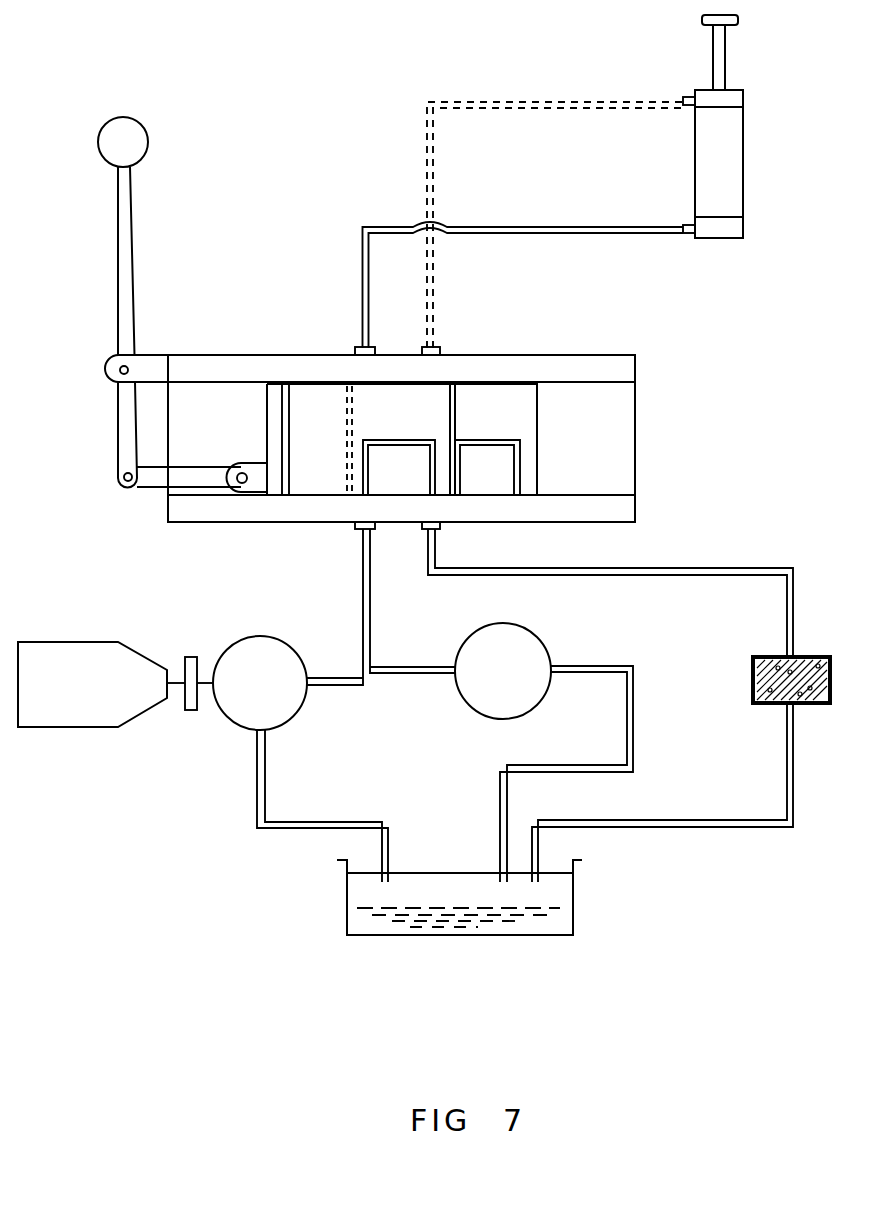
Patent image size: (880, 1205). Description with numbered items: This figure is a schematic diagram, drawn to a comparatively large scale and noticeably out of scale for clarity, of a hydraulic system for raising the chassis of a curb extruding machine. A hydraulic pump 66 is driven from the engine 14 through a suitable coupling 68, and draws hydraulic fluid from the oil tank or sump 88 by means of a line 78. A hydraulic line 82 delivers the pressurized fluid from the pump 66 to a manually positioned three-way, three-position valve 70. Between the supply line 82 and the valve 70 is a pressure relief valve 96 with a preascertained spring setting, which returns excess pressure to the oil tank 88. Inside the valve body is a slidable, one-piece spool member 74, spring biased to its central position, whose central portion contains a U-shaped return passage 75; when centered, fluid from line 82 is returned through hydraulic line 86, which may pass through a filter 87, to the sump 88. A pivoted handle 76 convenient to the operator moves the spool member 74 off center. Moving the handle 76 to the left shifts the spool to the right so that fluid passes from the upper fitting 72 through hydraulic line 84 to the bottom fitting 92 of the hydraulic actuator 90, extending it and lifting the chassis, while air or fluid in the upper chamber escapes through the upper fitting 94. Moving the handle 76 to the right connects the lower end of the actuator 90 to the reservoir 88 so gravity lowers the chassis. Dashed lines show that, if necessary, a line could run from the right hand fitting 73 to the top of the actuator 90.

The engine 14 is at (58, 723).
The hydraulic pump 66 is at (292, 719).
The coupling 68 is at (190, 711).
The three-way, three-position valve 70 is at (608, 357).
The upper fitting 72 is at (356, 349).
The right hand fitting 73 is at (433, 348).
The spool member 74 is at (530, 409).
The U-shaped return passage 75 is at (417, 440).
The pivoted handle 76 is at (125, 189).
The line 78 is at (295, 830).
The hydraulic line 82 is at (362, 572).
The hydraulic line 84 is at (361, 289).
The hydraulic line 86 is at (726, 568).
The filter 87 is at (825, 656).
The oil tank or sump 88 is at (574, 898).
The hydraulic actuator 90 is at (735, 186).
The bottom fitting 92 is at (689, 234).
The upper fitting 94 is at (689, 96).
The pressure relief valve 96 is at (525, 629).